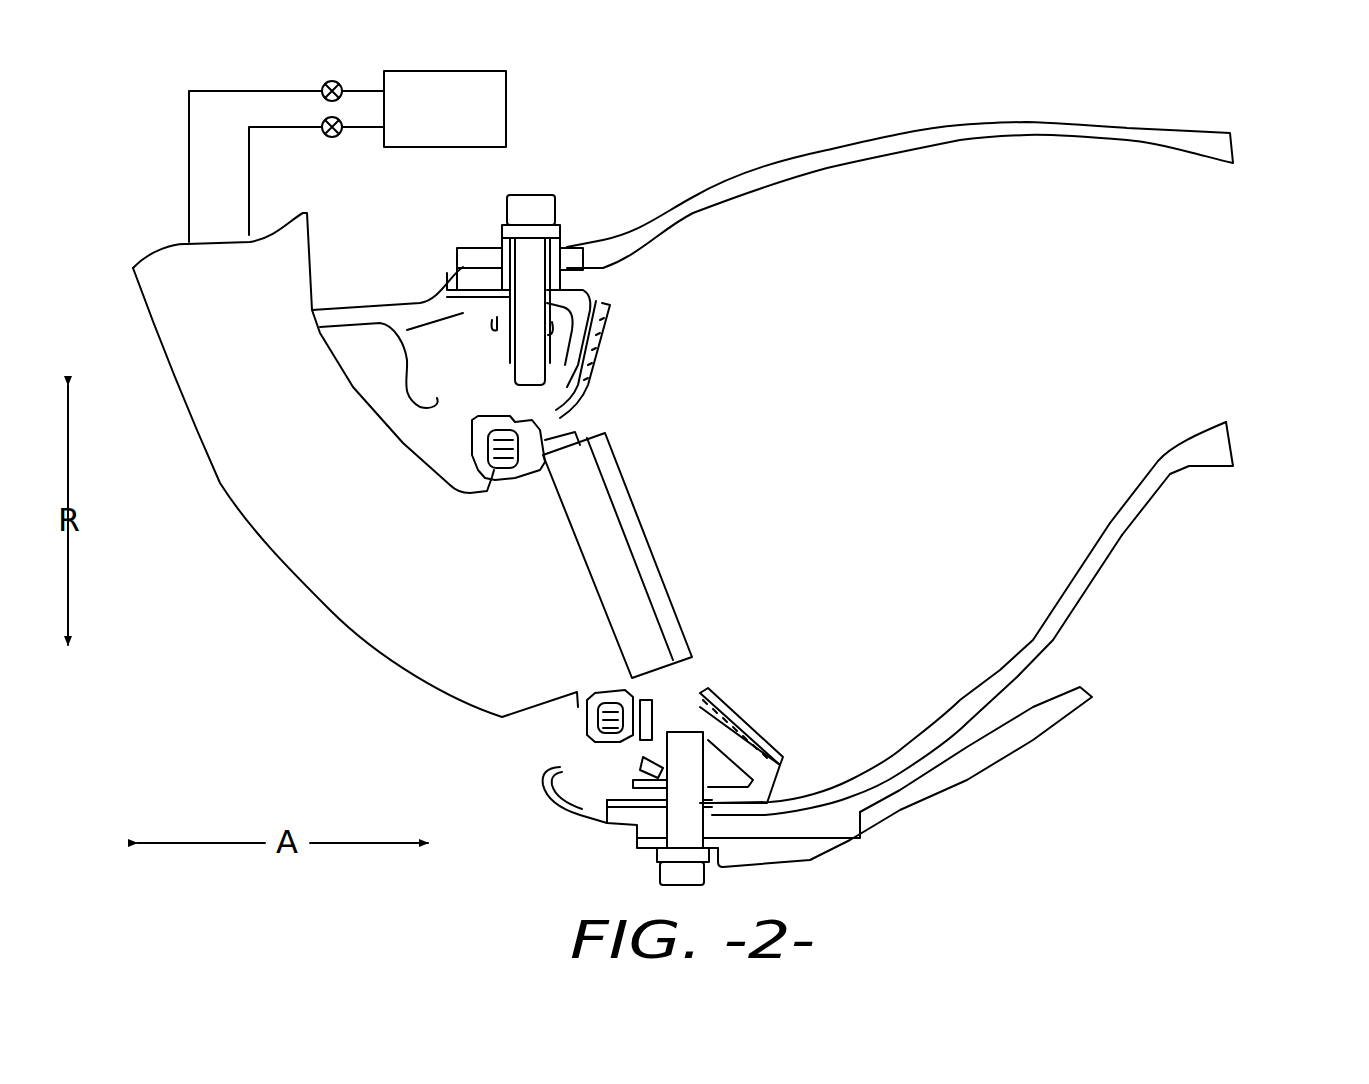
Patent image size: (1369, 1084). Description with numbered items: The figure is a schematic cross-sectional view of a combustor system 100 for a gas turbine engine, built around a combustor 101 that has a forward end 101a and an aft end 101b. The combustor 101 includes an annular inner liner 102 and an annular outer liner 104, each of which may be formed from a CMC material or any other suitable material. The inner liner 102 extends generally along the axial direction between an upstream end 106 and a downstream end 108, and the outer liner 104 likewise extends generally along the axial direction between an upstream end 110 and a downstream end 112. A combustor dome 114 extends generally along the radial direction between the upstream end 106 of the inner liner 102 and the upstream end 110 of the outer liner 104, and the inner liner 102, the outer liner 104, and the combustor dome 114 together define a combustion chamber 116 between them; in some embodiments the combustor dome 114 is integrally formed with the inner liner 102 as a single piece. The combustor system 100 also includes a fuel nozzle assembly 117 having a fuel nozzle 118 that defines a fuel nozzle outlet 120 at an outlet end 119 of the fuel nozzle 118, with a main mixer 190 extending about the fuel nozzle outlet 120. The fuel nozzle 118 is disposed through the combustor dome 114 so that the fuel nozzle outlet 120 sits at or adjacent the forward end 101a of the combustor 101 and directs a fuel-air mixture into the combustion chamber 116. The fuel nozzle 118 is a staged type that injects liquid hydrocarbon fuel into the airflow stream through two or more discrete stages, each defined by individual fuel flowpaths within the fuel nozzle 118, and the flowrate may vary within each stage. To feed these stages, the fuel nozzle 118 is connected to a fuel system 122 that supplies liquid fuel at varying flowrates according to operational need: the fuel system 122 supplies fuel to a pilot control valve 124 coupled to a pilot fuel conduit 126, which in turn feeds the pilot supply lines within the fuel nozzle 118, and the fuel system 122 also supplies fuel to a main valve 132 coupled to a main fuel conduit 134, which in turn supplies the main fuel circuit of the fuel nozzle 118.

The combustor system 100 is at (683, 120).
The combustor 101 is at (943, 162).
The forward end 101a is at (538, 810).
The aft end 101b is at (1268, 460).
The annular inner liner 102 is at (1026, 590).
The annular outer liner 104 is at (1030, 123).
The upstream end 106 is at (797, 770).
The downstream end 108 is at (1192, 412).
The upstream end 110 is at (590, 230).
The downstream end 112 is at (1217, 120).
The combustor dome 114 is at (606, 336).
The combustion chamber 116 is at (930, 407).
The fuel nozzle assembly 117 is at (243, 557).
The fuel nozzle 118 is at (340, 586).
The outlet end 119 is at (600, 410).
The fuel nozzle outlet 120 is at (680, 566).
The fuel system 122 is at (466, 119).
The pilot control valve 124 is at (326, 82).
The pilot fuel conduit 126 is at (185, 163).
The main valve 132 is at (334, 139).
The main fuel conduit 134 is at (252, 210).
The main mixer 190 is at (582, 736).